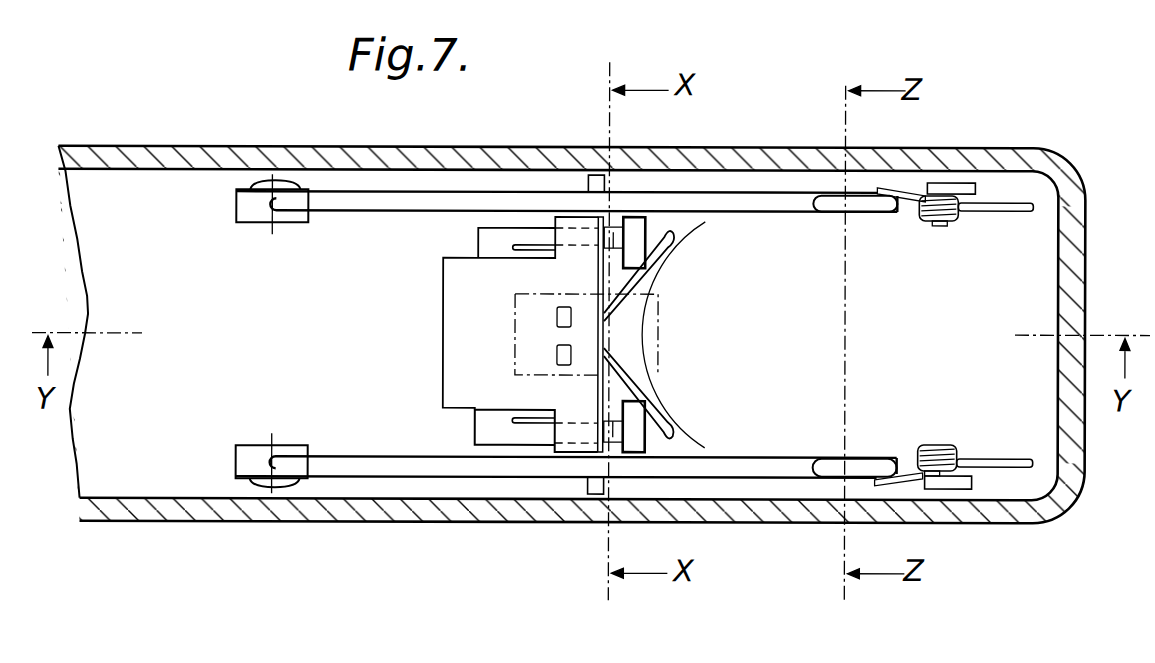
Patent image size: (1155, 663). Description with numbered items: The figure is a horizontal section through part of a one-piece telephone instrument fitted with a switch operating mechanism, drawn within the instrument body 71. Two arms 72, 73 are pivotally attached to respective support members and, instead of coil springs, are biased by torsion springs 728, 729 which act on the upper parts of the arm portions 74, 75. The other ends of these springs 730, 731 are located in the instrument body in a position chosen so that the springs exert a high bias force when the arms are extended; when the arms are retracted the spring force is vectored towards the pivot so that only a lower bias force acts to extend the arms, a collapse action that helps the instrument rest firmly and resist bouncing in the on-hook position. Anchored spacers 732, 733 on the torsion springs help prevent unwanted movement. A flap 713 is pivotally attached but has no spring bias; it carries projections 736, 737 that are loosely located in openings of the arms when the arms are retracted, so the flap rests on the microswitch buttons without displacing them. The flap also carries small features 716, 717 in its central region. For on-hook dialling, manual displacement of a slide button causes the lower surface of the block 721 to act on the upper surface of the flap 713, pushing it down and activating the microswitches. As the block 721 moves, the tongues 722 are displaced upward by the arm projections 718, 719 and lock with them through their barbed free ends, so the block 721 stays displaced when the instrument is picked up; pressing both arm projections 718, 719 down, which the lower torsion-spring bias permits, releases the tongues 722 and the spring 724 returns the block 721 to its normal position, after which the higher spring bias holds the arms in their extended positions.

The housing wall 71 is at (316, 147).
The arm 72 is at (758, 203).
The arm 73 is at (752, 461).
The upper part of arm portion 74 is at (868, 213).
The upper part of arm portion 75 is at (860, 461).
The flap 713 is at (457, 286).
The upper pin 716 is at (556, 318).
The lower pin 717 is at (556, 355).
The arm projection 718 is at (638, 228).
The arm projection 719 is at (641, 421).
The block 721 is at (483, 425).
The tongue 722 is at (622, 212).
The spring 724 is at (640, 280).
The torsion spring 728 is at (942, 220).
The torsion spring 729 is at (955, 415).
The other end of torsion spring 730 is at (960, 214).
The other end of torsion spring 731 is at (957, 452).
The anchored spacer 732 is at (938, 184).
The anchored spacer 733 is at (940, 488).
The projection 736 is at (590, 181).
The projection 737 is at (586, 487).